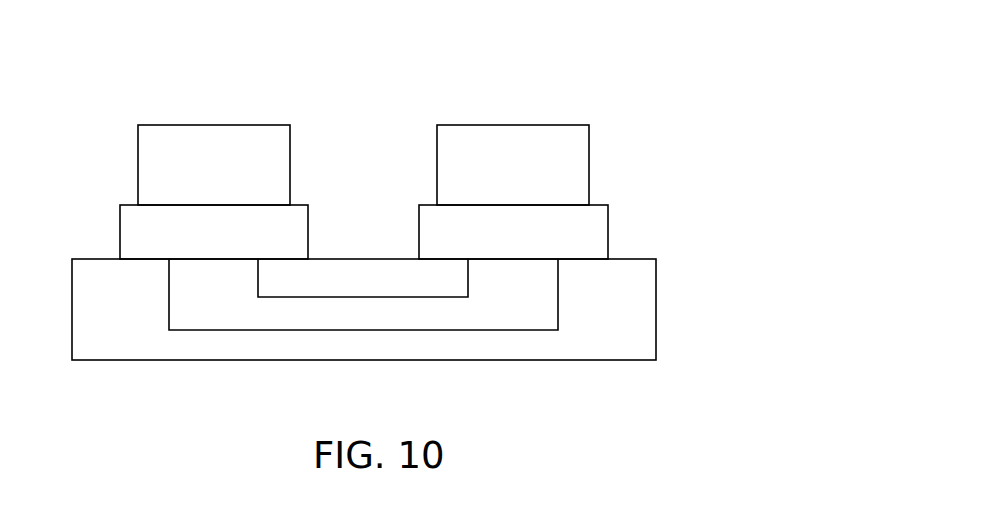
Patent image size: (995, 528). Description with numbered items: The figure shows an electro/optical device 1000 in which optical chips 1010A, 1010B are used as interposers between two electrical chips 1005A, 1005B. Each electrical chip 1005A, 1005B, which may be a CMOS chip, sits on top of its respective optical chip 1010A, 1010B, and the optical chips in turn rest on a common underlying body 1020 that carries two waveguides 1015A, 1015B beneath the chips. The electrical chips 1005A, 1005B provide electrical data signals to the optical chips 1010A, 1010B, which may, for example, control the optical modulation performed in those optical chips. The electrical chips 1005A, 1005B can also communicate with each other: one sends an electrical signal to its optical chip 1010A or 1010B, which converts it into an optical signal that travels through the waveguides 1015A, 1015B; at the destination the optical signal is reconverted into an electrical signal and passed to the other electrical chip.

The electro/optical device 1000 is at (722, 105).
The electrical chip 1005A is at (237, 124).
The electrical chip 1005B is at (539, 124).
The optical chip 1010A is at (308, 232).
The optical chip 1010B is at (608, 233).
The waveguide 1015A is at (423, 297).
The waveguide 1015B is at (545, 330).
The substrate 1020 is at (656, 308).